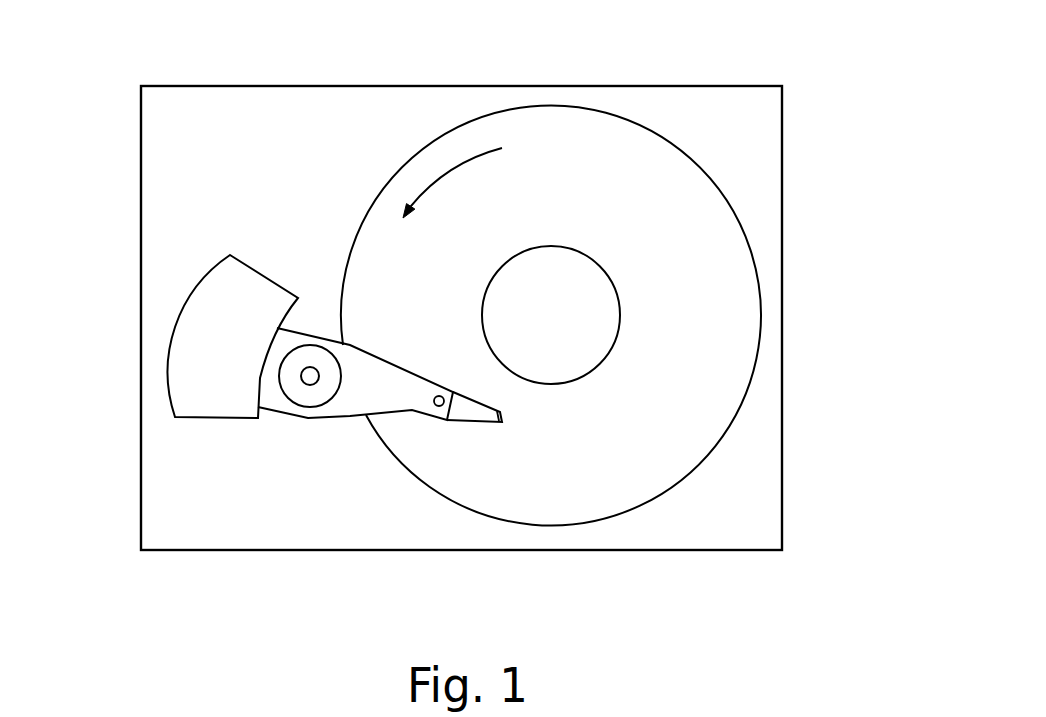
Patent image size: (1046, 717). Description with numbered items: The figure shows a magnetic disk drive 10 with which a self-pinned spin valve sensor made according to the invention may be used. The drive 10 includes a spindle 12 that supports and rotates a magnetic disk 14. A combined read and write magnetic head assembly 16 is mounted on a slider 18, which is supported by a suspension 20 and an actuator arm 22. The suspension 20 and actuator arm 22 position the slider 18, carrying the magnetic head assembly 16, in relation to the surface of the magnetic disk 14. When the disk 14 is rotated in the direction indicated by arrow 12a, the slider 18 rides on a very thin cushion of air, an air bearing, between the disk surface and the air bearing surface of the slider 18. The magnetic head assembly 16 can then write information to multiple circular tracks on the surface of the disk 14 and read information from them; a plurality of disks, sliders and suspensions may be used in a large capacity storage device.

The magnetic disk drive 10 is at (190, 42).
The spindle 12 is at (610, 350).
The arrow 12a is at (440, 180).
The magnetic disk 14 is at (638, 122).
The combined read and write magnetic head assembly 16 is at (503, 418).
The slider 18 is at (500, 423).
The suspension 20 is at (457, 418).
The actuator arm 22 is at (343, 345).